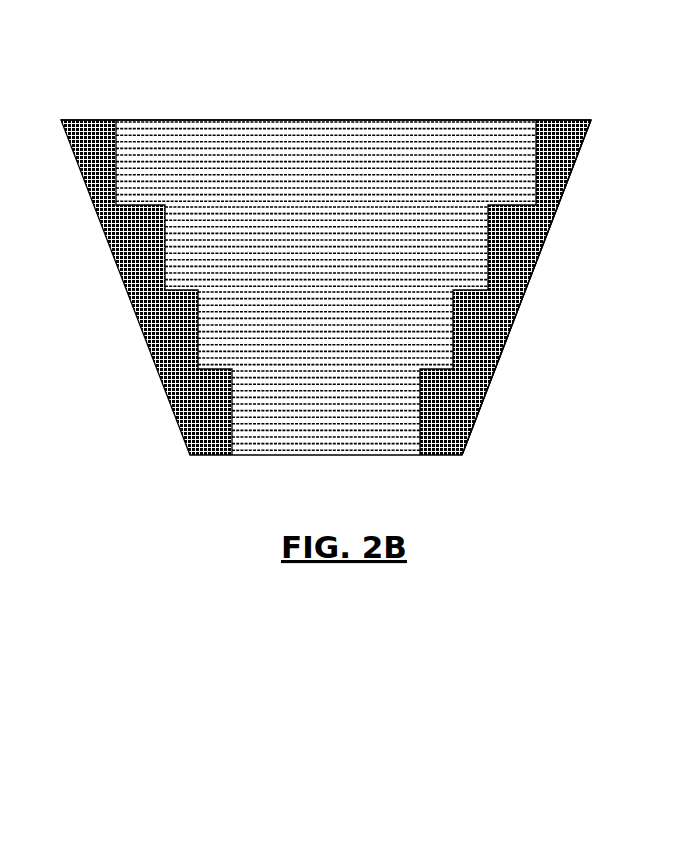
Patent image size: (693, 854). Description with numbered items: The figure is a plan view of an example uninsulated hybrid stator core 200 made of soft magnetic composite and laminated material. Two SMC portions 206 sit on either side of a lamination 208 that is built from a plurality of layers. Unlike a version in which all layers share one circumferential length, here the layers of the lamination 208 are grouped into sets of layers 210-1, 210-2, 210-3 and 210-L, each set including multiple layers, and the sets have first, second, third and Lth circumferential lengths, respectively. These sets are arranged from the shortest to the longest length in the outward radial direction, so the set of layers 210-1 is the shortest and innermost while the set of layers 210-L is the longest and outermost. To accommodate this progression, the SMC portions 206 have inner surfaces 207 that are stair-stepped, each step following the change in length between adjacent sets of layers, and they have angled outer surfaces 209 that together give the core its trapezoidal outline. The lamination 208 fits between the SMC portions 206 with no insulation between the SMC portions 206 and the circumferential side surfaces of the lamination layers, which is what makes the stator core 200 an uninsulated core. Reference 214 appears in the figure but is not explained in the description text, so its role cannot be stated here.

The uninsulated stator core 200 is at (583, 75).
The SMC portions 206 is at (550, 142).
The inner surfaces 207 is at (482, 217).
The lamination 208 is at (320, 95).
The angled outer surfaces 209 is at (552, 202).
The sidewall 214 is at (552, 182).
The Lth set of layers 210-L is at (372, 112).
The third set of layers 210-3 is at (482, 243).
The second set of layers 210-2 is at (445, 327).
The first set of layers 210-1 is at (263, 447).